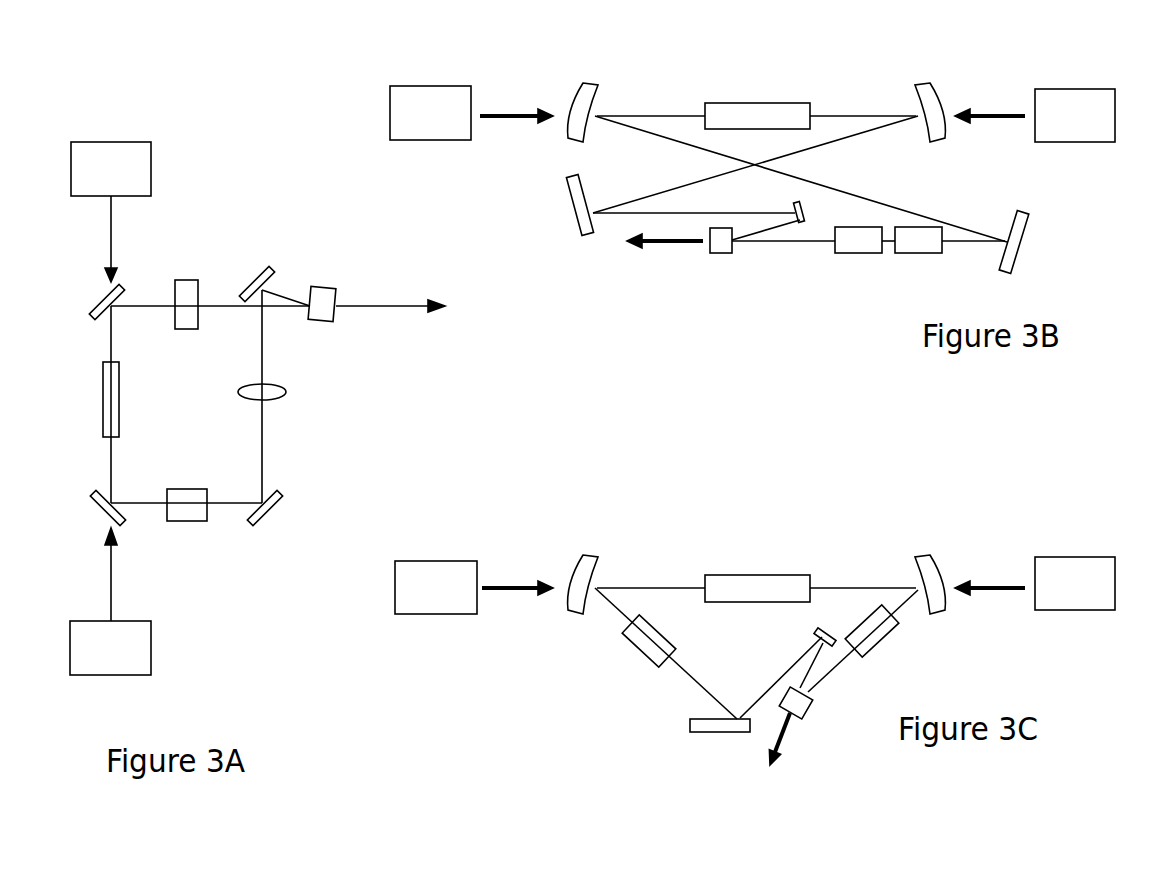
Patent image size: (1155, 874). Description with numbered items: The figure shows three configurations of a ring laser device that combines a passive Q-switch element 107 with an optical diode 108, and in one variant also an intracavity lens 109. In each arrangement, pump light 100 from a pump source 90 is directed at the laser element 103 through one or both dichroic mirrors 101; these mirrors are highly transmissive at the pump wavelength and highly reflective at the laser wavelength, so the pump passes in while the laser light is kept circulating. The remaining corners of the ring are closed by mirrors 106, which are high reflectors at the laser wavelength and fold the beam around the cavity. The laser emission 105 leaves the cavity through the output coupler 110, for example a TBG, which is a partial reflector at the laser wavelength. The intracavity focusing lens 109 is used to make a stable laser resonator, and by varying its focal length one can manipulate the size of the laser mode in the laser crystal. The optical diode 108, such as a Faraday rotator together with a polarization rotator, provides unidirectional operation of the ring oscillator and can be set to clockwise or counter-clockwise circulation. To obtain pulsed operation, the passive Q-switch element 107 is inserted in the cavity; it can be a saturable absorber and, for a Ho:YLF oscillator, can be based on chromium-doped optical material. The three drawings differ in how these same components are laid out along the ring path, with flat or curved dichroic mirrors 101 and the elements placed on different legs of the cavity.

In FIG. 3A, the pump source 90 is at (125, 142).
In FIG. 3B, the pump source 90 is at (428, 86).
In FIG. 3C, the pump source 90 is at (435, 561).
In FIG. 3A, the pump light 100 is at (111, 225).
In FIG. 3B, the pump light 100 is at (518, 112).
In FIG. 3C, the pump light 100 is at (517, 585).
In FIG. 3A, the dichroic mirrors 101 is at (92, 308).
In FIG. 3B, the dichroic mirrors 101 is at (580, 83).
In FIG. 3C, the dichroic mirrors 101 is at (580, 555).
In FIG. 3A, the laser element 103 is at (103, 408).
In FIG. 3B, the laser element 103 is at (778, 103).
In FIG. 3C, the laser element 103 is at (783, 575).
In FIG. 3A, the laser emission 105 is at (398, 306).
In FIG. 3B, the laser emission 105 is at (663, 244).
In FIG. 3C, the laser emission 105 is at (780, 740).
In FIG. 3A, the mirrors 106 is at (262, 273).
In FIG. 3B, the mirrors 106 is at (580, 213).
In FIG. 3C, the mirrors 106 is at (713, 733).
In FIG. 3A, the passive Q-switch element 107 is at (190, 280).
In FIG. 3B, the passive Q-switch element 107 is at (910, 253).
In FIG. 3C, the passive Q-switch element 107 is at (637, 652).
In FIG. 3A, the optical diode 108 is at (183, 521).
In FIG. 3B, the optical diode 108 is at (857, 253).
In FIG. 3C, the optical diode 108 is at (888, 628).
In FIG. 3A, the lens 109 is at (285, 397).
In FIG. 3A, the output coupler 110 is at (323, 288).
In FIG. 3B, the output coupler 110 is at (720, 253).
In FIG. 3C, the output coupler 110 is at (813, 709).